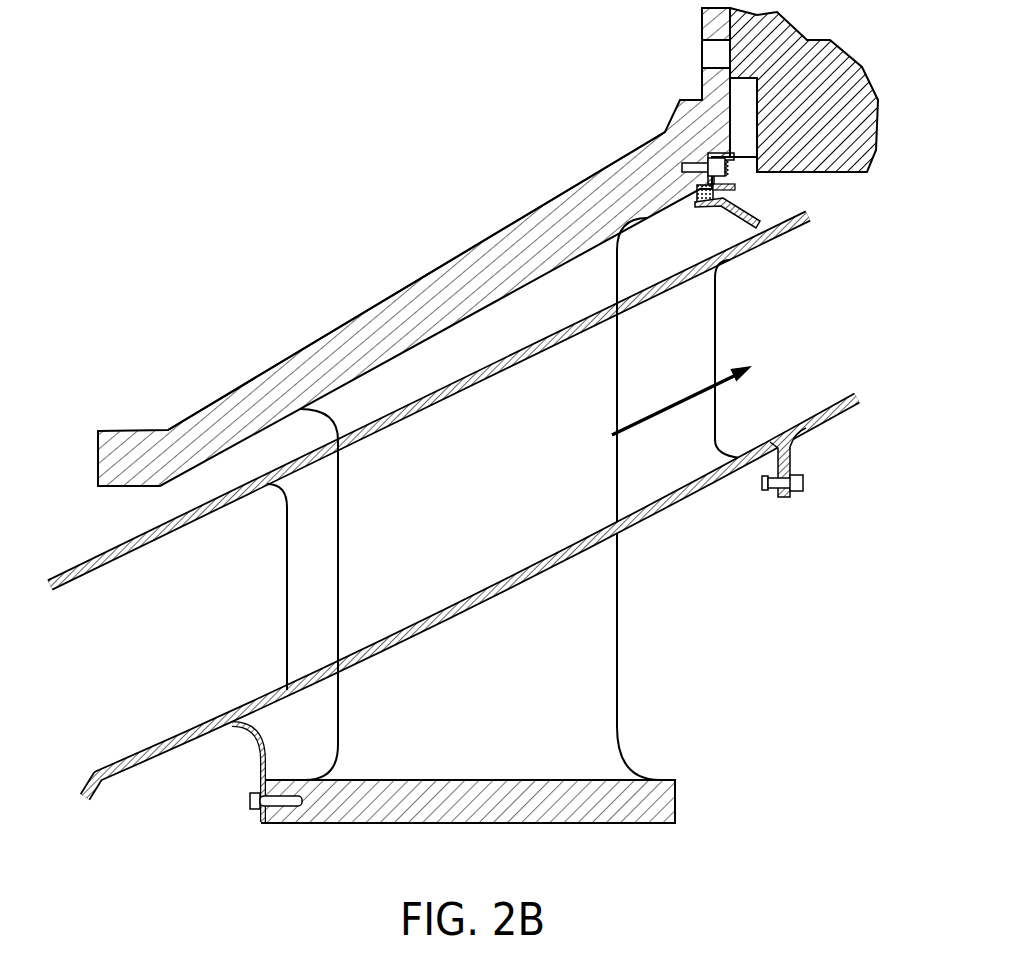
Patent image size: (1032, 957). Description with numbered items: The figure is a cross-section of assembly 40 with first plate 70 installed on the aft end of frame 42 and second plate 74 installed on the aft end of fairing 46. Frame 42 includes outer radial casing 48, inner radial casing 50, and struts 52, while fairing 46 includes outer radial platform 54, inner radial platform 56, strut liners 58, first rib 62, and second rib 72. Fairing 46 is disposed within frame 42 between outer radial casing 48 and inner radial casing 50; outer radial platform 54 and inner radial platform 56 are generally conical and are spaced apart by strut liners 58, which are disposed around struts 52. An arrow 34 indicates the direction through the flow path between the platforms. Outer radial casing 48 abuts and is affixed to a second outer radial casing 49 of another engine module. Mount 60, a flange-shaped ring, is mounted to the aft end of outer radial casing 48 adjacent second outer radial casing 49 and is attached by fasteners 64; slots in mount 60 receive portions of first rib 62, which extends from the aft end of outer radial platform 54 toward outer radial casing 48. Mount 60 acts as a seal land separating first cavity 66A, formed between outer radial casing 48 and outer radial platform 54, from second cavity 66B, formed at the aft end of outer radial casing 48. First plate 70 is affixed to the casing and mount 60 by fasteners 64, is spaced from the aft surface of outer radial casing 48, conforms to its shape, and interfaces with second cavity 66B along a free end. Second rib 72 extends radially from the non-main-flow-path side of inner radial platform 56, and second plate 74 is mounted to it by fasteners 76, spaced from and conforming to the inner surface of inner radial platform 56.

The flow direction arrow 34 is at (668, 410).
The assembly 40 is at (270, 200).
The frame 42 is at (476, 219).
The fairing 46 is at (198, 770).
The outer radial casing 48 is at (417, 305).
The second outer radial casing 49 is at (783, 43).
The inner radial casing 50 is at (662, 795).
The struts 52 is at (590, 668).
The outer radial platform 54 is at (812, 222).
The inner radial platform 56 is at (732, 472).
The strut liners 58 is at (717, 342).
The mount 60 is at (735, 183).
The first rib 62 is at (742, 220).
The fasteners 64 is at (725, 172).
The first cavity 66A is at (675, 269).
The second cavity 66B is at (742, 98).
The first plate 70 is at (732, 160).
The second rib 72 is at (783, 500).
The second plate 74 is at (800, 444).
The fasteners 76 is at (806, 488).